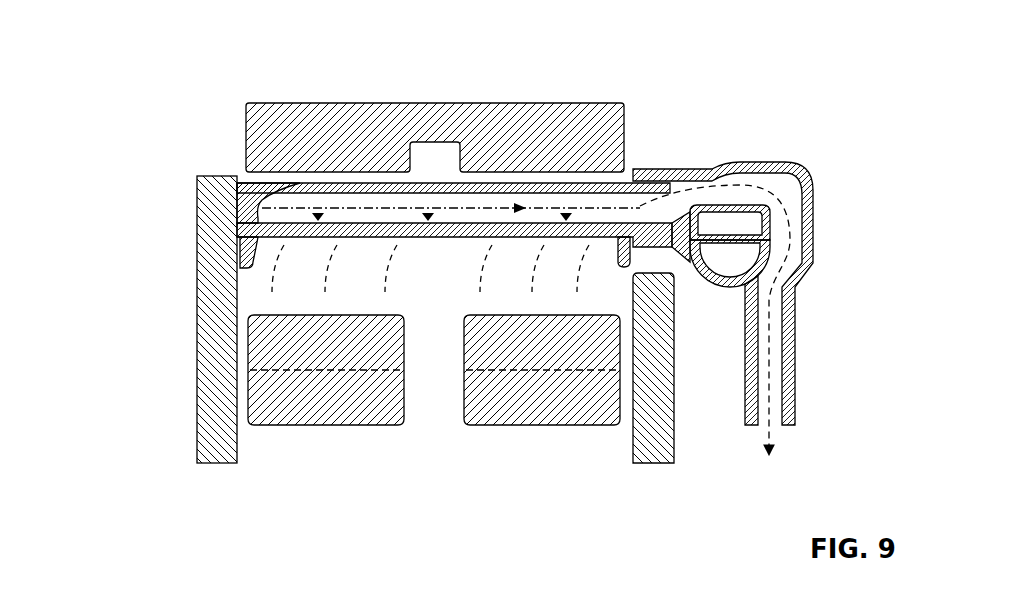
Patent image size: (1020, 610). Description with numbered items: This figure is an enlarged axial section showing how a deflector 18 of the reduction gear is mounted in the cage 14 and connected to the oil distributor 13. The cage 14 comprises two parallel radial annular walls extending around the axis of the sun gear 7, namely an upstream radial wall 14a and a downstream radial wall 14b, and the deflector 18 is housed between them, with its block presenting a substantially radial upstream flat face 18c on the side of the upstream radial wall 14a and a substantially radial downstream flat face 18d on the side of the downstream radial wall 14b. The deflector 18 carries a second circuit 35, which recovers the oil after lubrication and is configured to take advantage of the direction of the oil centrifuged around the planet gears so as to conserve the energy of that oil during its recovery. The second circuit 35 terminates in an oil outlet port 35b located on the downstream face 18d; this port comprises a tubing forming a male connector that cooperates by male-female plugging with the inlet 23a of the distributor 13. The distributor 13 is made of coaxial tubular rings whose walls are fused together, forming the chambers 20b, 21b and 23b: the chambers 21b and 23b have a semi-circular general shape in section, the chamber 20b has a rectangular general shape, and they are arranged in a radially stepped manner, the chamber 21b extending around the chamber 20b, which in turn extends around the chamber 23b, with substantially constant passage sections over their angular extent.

The sun gear 7 is at (535, 118).
The distributor 13 is at (799, 330).
The cage 14 is at (136, 319).
The upstream radial wall 14a is at (193, 321).
The downstream radial wall 14b is at (668, 445).
The deflector 18 is at (388, 268).
The upstream flat face 18c is at (242, 236).
The downstream flat face 18d is at (621, 259).
The chamber 20b is at (746, 232).
The chamber 21b is at (722, 270).
The inlet 23a is at (677, 170).
The chamber 23b is at (723, 257).
The second circuit 35 is at (437, 181).
The oil outlet port 35b is at (651, 238).